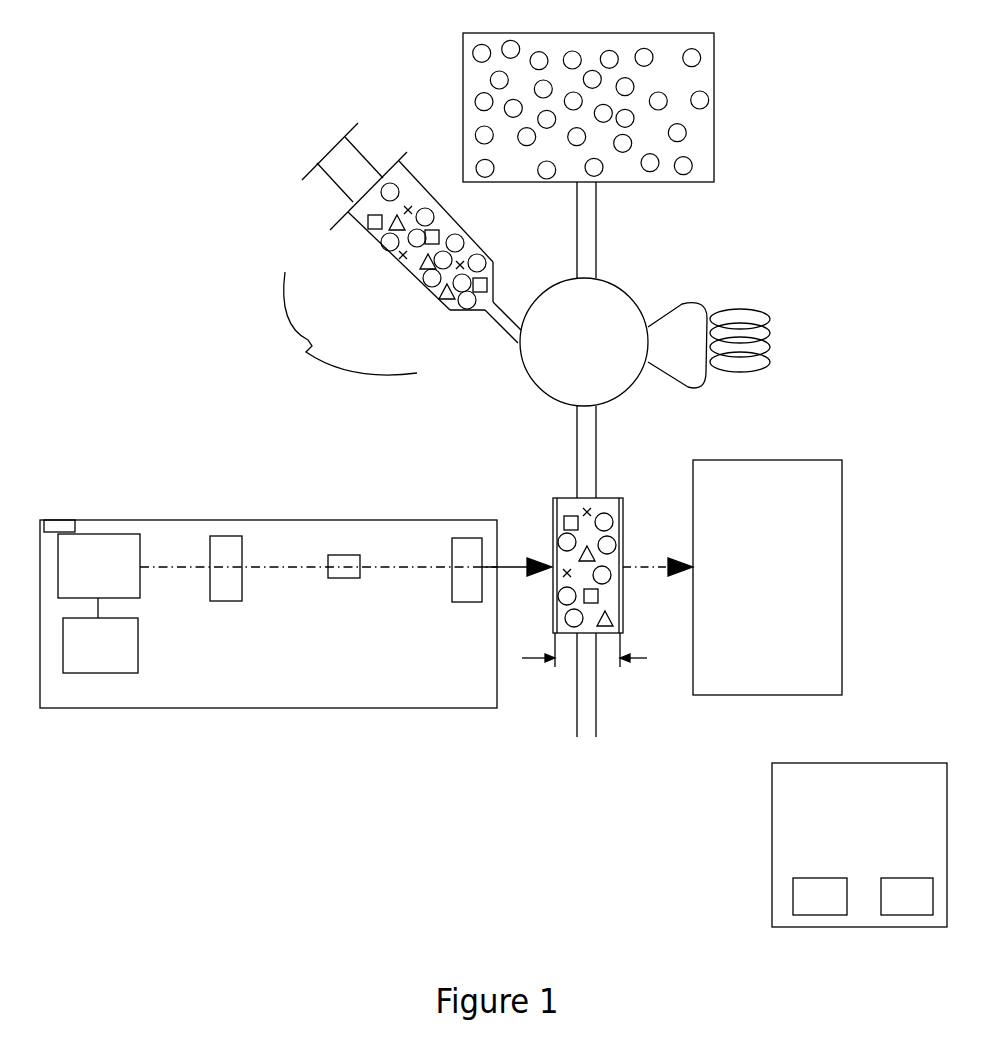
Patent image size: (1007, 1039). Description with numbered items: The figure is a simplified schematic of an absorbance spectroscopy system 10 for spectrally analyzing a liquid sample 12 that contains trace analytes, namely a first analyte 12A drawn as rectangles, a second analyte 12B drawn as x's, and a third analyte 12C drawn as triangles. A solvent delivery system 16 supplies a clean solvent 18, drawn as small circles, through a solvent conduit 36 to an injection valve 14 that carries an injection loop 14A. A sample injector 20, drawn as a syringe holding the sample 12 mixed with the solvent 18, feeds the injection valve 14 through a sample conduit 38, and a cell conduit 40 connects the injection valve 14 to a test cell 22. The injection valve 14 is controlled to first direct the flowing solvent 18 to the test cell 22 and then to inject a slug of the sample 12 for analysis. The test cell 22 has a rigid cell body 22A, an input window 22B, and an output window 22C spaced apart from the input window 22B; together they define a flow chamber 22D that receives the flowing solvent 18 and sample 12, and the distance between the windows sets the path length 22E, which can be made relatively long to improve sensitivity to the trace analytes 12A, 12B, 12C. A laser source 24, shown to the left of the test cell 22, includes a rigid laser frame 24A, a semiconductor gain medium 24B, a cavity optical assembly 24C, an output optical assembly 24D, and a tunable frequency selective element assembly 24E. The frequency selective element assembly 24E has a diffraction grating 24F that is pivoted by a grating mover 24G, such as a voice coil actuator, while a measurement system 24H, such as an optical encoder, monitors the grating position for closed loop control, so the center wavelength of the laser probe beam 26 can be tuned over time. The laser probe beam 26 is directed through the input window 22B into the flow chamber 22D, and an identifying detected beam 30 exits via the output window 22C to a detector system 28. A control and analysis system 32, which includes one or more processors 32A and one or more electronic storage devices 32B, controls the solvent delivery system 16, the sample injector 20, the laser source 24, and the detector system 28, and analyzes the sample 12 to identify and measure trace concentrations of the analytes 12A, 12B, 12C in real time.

The absorbance spectroscopy system 10 is at (861, 195).
The sample 12 is at (383, 265).
The first analyte 12A is at (375, 224).
The second analyte 12B is at (400, 258).
The third analyte 12C is at (438, 297).
The injection valve 14 is at (641, 287).
The injection loop 14A is at (770, 330).
The solvent delivery system 16 is at (726, 56).
The solvent 18 is at (683, 135).
The sample injector 20 is at (312, 145).
The test cell 22 is at (539, 493).
The cell body 22A is at (565, 497).
The input window 22B is at (553, 518).
The output window 22C is at (623, 515).
The flow chamber 22D is at (570, 632).
The path length 22E is at (606, 652).
The laser source 24 is at (262, 613).
The laser frame 24A is at (389, 689).
The semiconductor gain medium 24B is at (345, 560).
The cavity optical assembly 24C is at (228, 547).
The output optical assembly 24D is at (458, 553).
The tunable frequency selective element assembly 24E is at (93, 519).
The diffraction grating 24F is at (99, 576).
The grating mover 24G is at (100, 645).
The measurement system 24H is at (60, 528).
The laser probe beam 26 is at (513, 572).
The detector system 28 is at (751, 595).
The identifying detected beam 30 is at (650, 567).
The control and analysis system 32 is at (846, 820).
The processor 32A is at (818, 903).
The electronic storage device 32B is at (911, 907).
The solvent conduit 36 is at (590, 222).
The sample conduit 38 is at (507, 327).
The cell conduit 40 is at (592, 447).